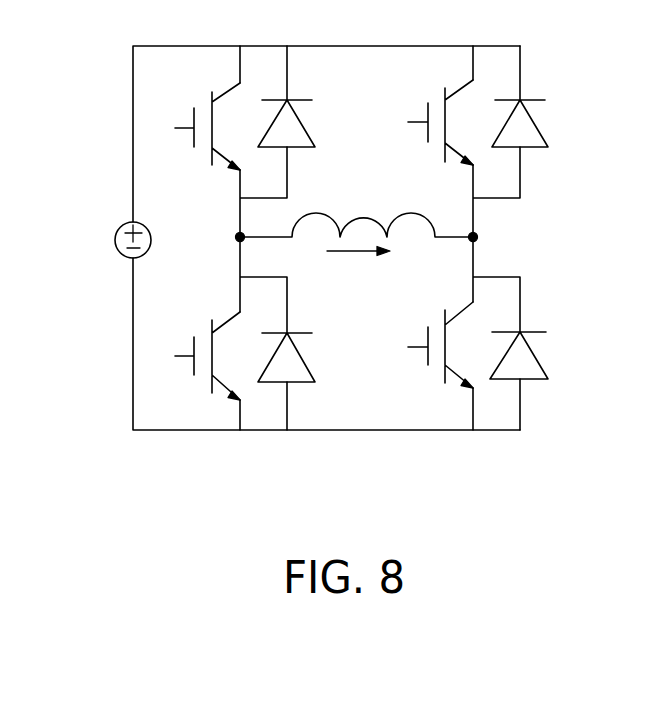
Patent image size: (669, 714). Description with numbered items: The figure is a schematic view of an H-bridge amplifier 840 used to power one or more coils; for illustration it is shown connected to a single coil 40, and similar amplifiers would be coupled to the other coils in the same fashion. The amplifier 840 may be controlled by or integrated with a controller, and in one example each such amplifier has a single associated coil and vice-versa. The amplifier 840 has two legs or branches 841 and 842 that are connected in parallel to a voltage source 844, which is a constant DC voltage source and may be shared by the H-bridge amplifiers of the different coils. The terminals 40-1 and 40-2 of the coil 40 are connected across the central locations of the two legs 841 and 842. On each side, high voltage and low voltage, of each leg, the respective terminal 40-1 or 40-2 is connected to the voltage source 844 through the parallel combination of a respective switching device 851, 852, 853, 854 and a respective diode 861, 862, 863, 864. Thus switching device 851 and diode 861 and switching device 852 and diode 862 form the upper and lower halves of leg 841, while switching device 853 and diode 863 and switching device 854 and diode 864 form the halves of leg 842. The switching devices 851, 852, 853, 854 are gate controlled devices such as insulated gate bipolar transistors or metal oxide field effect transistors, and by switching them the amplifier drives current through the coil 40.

The H-bridge amplifier 840 is at (368, 448).
The leg 841 is at (264, 443).
The leg 842 is at (497, 438).
The voltage source 844 is at (115, 228).
The switching device 851 is at (180, 118).
The switching device 852 is at (178, 367).
The switching device 853 is at (419, 104).
The switching device 854 is at (412, 365).
The diode 861 is at (326, 154).
The diode 862 is at (332, 365).
The diode 863 is at (565, 111).
The diode 864 is at (566, 360).
The coil 40 is at (378, 193).
The terminal 40-1 is at (240, 237).
The terminal 40-2 is at (473, 237).